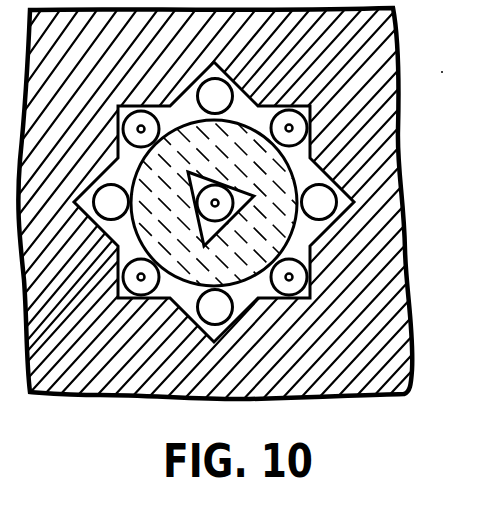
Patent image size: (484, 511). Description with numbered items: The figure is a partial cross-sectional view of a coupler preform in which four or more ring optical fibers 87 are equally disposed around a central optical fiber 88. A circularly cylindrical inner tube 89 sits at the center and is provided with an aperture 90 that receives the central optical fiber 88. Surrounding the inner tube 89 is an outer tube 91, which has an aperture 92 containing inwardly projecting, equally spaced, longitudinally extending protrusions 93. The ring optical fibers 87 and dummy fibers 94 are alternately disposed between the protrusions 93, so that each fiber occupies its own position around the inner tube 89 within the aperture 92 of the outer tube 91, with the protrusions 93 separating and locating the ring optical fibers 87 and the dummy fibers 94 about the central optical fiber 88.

The ring optical fibers 87 is at (126, 134).
The central optical fiber 88 is at (197, 204).
The circularly cylindrical inner tube 89 is at (238, 165).
The aperture 90 is at (247, 203).
The outer tube 91 is at (131, 66).
The aperture 92 is at (304, 249).
The protrusions 93 is at (257, 103).
The dummy fibers 94 is at (218, 92).